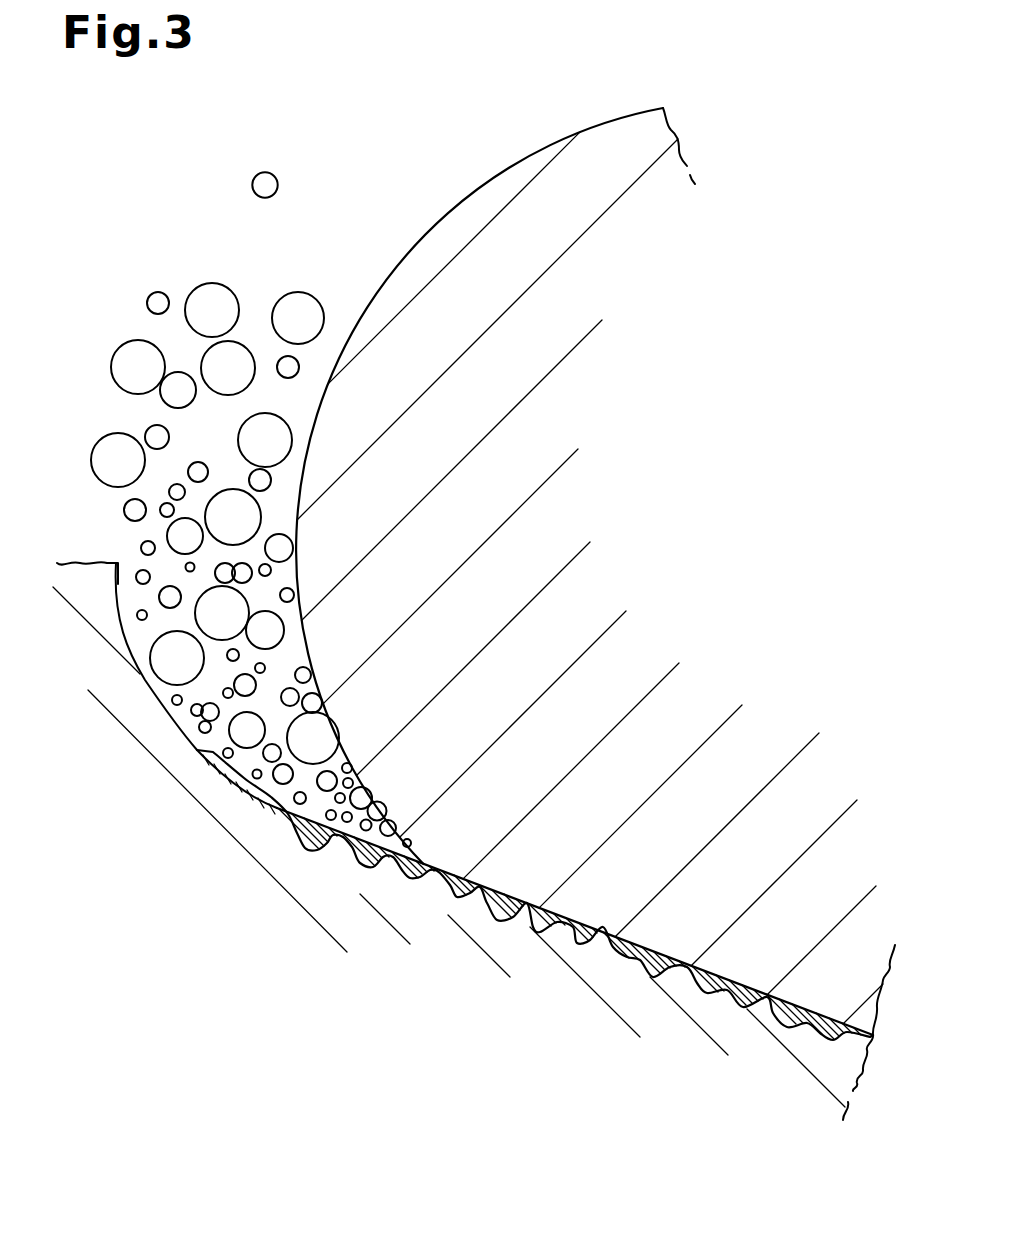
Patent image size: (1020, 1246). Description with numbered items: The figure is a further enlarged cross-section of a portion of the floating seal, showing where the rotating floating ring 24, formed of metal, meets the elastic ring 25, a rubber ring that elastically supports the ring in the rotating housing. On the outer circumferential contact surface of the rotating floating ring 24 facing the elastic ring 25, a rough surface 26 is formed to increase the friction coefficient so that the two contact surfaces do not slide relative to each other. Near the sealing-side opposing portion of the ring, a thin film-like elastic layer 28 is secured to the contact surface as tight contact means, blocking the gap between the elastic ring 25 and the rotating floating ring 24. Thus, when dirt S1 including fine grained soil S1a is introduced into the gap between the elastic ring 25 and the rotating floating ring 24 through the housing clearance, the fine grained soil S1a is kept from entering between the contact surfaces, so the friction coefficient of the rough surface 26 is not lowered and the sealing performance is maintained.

The rotating floating ring 24 is at (853, 1082).
The elastic ring 25 is at (416, 243).
The rough surface 26 is at (712, 988).
The elastic layer 28 is at (297, 836).
The dirt S1 is at (193, 291).
The fine grained soil S1a is at (335, 820).